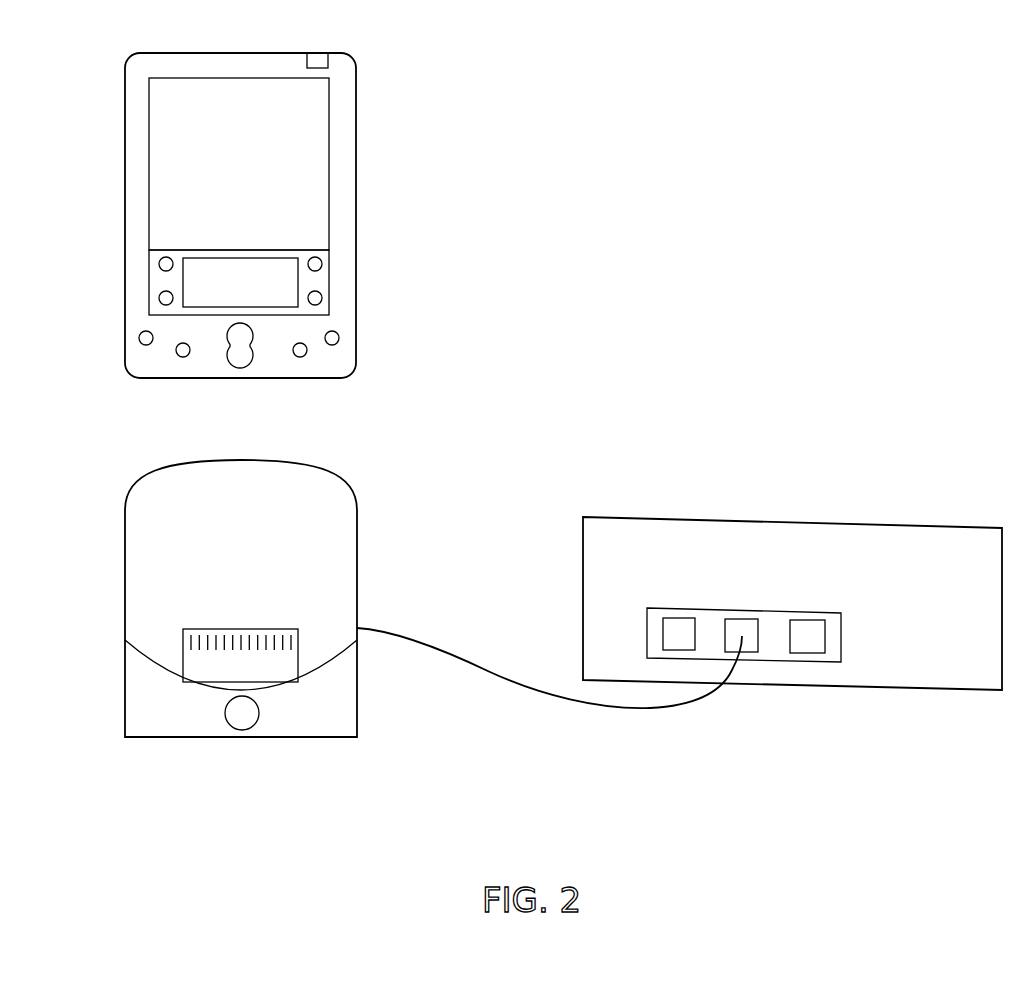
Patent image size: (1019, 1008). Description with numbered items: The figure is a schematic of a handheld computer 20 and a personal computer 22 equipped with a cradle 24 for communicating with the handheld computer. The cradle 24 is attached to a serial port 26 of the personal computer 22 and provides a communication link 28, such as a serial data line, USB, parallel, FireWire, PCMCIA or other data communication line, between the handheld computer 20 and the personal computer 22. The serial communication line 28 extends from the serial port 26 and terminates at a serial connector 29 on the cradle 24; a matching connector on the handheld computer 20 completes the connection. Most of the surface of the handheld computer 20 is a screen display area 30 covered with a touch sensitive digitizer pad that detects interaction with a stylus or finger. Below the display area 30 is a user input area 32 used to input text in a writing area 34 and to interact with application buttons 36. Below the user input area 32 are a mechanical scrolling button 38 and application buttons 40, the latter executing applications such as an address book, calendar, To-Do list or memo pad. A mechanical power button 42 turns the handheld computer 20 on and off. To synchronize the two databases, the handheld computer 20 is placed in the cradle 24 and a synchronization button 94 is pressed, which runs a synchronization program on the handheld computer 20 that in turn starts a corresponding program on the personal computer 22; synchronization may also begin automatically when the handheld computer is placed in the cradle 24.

The handheld computer 20 is at (355, 138).
The personal computer 22 is at (790, 522).
The cradle 24 is at (358, 575).
The serial port 26 is at (758, 637).
The communication link 28 is at (493, 675).
The serial connector 29 is at (203, 628).
The screen display area 30 is at (157, 102).
The user input area 32 is at (283, 253).
The writing area 34 is at (192, 273).
The application buttons 36 is at (159, 262).
The mechanical scrolling button 38 is at (241, 365).
The application buttons 40 is at (146, 345).
The mechanical power button 42 is at (317, 57).
The synchronization button 94 is at (243, 715).